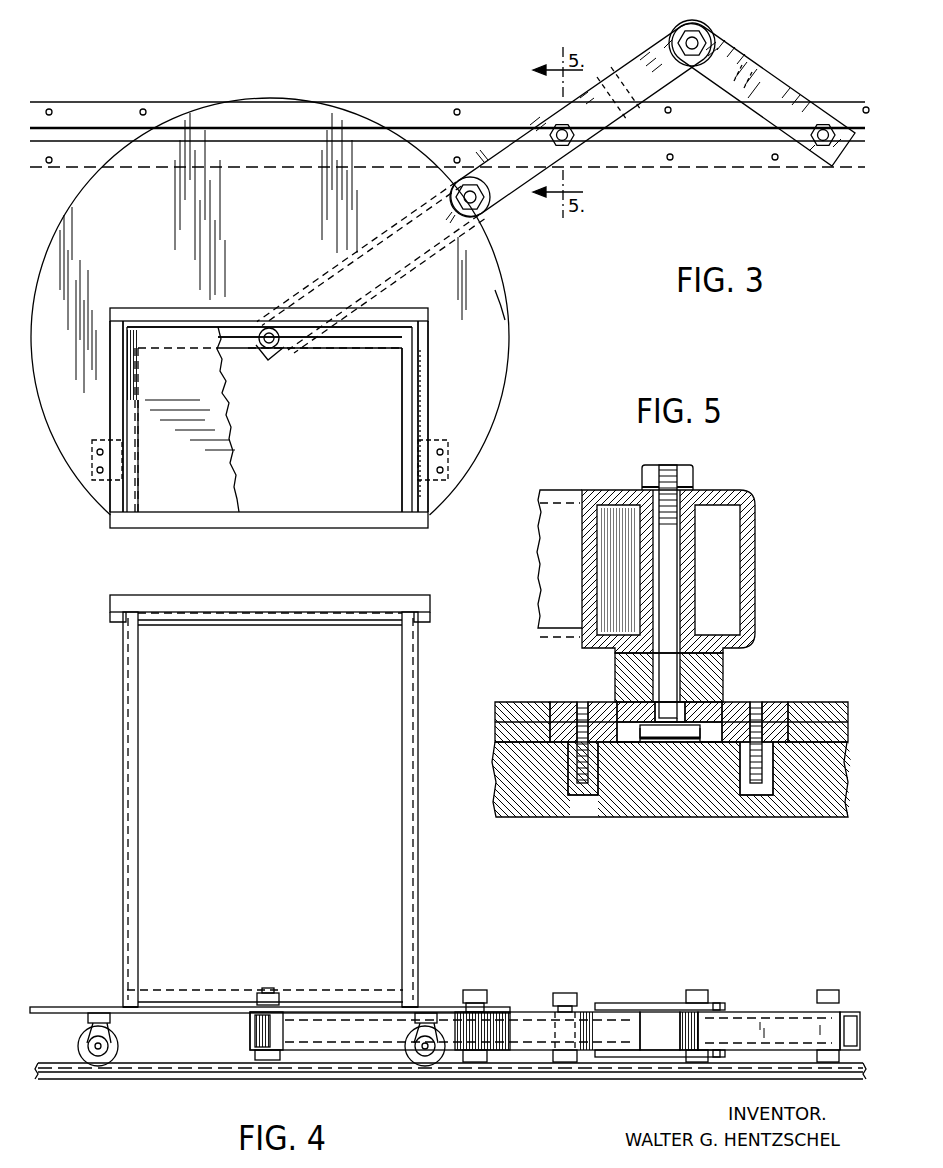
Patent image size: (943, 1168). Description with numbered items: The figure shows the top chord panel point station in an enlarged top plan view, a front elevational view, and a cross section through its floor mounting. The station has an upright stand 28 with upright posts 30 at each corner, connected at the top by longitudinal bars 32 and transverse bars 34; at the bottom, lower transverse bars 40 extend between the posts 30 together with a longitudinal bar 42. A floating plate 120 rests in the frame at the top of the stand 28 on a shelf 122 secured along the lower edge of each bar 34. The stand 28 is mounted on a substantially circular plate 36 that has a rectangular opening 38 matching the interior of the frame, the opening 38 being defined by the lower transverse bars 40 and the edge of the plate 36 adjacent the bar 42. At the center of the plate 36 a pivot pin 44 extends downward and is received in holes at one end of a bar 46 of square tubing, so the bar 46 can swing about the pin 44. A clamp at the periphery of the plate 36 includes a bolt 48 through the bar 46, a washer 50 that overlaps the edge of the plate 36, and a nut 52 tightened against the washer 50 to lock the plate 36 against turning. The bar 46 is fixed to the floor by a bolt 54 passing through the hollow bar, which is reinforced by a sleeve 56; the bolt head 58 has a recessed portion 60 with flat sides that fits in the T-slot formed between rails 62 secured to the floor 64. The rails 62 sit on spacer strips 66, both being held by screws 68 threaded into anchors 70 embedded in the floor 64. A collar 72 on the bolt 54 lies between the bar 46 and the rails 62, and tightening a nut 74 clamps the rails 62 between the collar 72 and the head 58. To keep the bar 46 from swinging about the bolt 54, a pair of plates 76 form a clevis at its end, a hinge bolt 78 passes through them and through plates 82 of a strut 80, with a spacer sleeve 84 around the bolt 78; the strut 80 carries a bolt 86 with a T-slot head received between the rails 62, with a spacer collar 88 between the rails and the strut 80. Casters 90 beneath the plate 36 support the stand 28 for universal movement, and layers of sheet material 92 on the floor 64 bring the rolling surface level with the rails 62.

In FIG. 3, the upright stand 28 is at (436, 410).
In FIG. 4, the upright stand 28 is at (118, 812).
In FIG. 4, the upright posts 30 is at (124, 722).
In FIG. 3, the longitudinal bars 32 is at (182, 288).
In FIG. 4, the longitudinal bars 32 is at (222, 578).
In FIG. 3, the transverse bars 34 is at (116, 380).
In FIG. 3, the plate 36 is at (502, 298).
In FIG. 4, the plate 36 is at (80, 1007).
In FIG. 3, the rectangular opening 38 is at (300, 348).
In FIG. 4, the rectangular opening 38 is at (178, 982).
In FIG. 3, the lower transverse bars 40 is at (402, 421).
In FIG. 3, the longitudinal bar 42 is at (358, 332).
In FIG. 4, the longitudinal bar 42 is at (346, 995).
In FIG. 3, the pivot pin 44 is at (264, 347).
In FIG. 4, the pivot pin 44 is at (268, 992).
In FIG. 3, the bar 46 is at (602, 118).
In FIG. 5, the bar 46 is at (557, 512).
In FIG. 4, the bar 46 is at (362, 1052).
In FIG. 3, the bolt 48 is at (486, 202).
In FIG. 4, the bolt 48 is at (472, 992).
In FIG. 3, the washer 50 is at (457, 205).
In FIG. 4, the washer 50 is at (457, 1004).
In FIG. 3, the nut 52 is at (471, 183).
In FIG. 4, the nut 52 is at (486, 997).
In FIG. 3, the bolt 54 is at (549, 125).
In FIG. 5, the bolt 54 is at (672, 467).
In FIG. 4, the bolt 54 is at (566, 993).
In FIG. 5, the sleeve 56 is at (690, 584).
In FIG. 5, the bolt head 58 is at (668, 736).
In FIG. 5, the recessed portion 60 is at (660, 713).
In FIG. 3, the rails 62 is at (698, 124).
In FIG. 5, the rails 62 is at (626, 744).
In FIG. 4, the rails 62 is at (511, 1067).
In FIG. 5, the floor 64 is at (517, 753).
In FIG. 5, the spacer strips 66 is at (557, 728).
In FIG. 4, the spacer strips 66 is at (478, 1073).
In FIG. 3, the screws 68 is at (671, 160).
In FIG. 5, the screws 68 is at (577, 764).
In FIG. 5, the anchors 70 is at (575, 795).
In FIG. 5, the collar 72 is at (628, 666).
In FIG. 5, the nut 74 is at (642, 480).
In FIG. 4, the plates 76 is at (635, 1003).
In FIG. 3, the hinge bolt 78 is at (706, 46).
In FIG. 4, the hinge bolt 78 is at (696, 1062).
In FIG. 3, the strut 80 is at (793, 90).
In FIG. 4, the strut 80 is at (785, 1015).
In FIG. 3, the plates 82 is at (738, 61).
In FIG. 4, the plates 82 is at (724, 1010).
In FIG. 4, the spacer sleeve 84 is at (694, 1030).
In FIG. 3, the bolt 86 is at (830, 128).
In FIG. 4, the bolt 86 is at (830, 992).
In FIG. 4, the spacer collar 88 is at (830, 1052).
In FIG. 4, the casters 90 is at (119, 1031).
In FIG. 5, the sheet material 92 is at (500, 735).
In FIG. 3, the floating plate 120 is at (230, 454).
In FIG. 4, the floating plate 120 is at (262, 623).
In FIG. 3, the shelf 122 is at (122, 468).